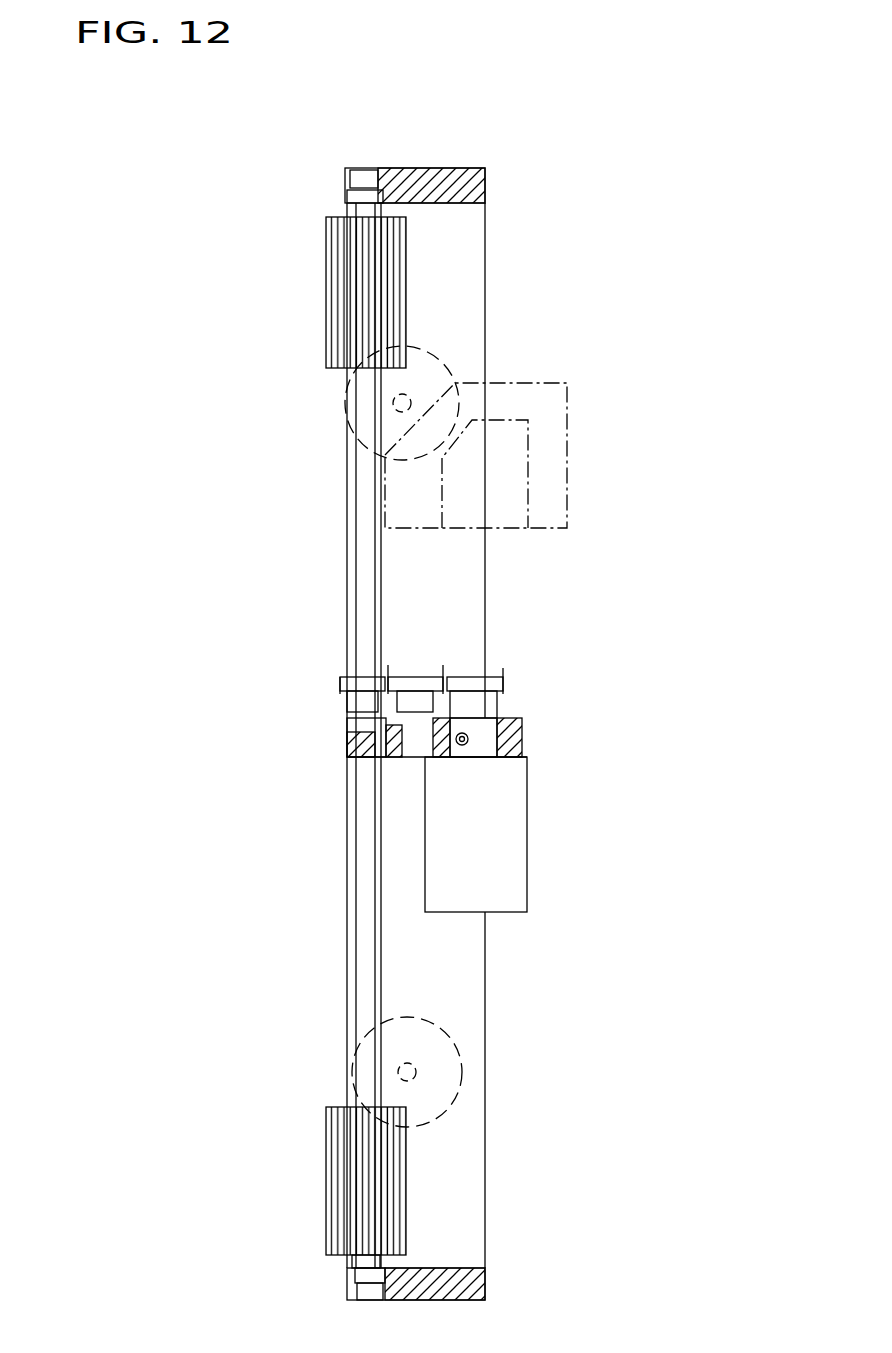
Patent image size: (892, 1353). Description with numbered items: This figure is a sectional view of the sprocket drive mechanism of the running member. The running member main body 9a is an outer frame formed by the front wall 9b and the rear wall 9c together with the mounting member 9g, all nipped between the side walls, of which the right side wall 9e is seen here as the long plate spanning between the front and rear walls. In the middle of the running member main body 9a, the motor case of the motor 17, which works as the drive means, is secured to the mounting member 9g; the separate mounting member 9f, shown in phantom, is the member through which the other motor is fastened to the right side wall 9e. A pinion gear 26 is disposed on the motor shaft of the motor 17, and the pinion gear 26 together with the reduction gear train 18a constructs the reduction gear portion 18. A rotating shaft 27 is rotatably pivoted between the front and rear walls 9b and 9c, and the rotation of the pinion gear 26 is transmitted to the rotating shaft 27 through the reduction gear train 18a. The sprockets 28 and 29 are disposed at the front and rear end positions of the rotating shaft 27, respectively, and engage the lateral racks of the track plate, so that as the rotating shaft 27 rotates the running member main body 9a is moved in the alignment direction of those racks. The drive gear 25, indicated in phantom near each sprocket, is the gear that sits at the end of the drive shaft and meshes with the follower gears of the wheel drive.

The running member main body 9a is at (506, 157).
The front wall 9b is at (485, 183).
The rear wall 9c is at (480, 1288).
The right side wall 9e is at (470, 1232).
The mounting member 9f is at (561, 423).
The mounting member 9g is at (518, 740).
The motor 17 is at (508, 892).
The reduction gear portion 18 is at (497, 661).
The reduction gear train 18a is at (350, 650).
The drive gear 25 is at (345, 413).
The pinion gear 26 is at (505, 685).
The rotating shaft 27 is at (368, 612).
The sprocket 28 is at (343, 324).
The sprocket 29 is at (345, 1225).